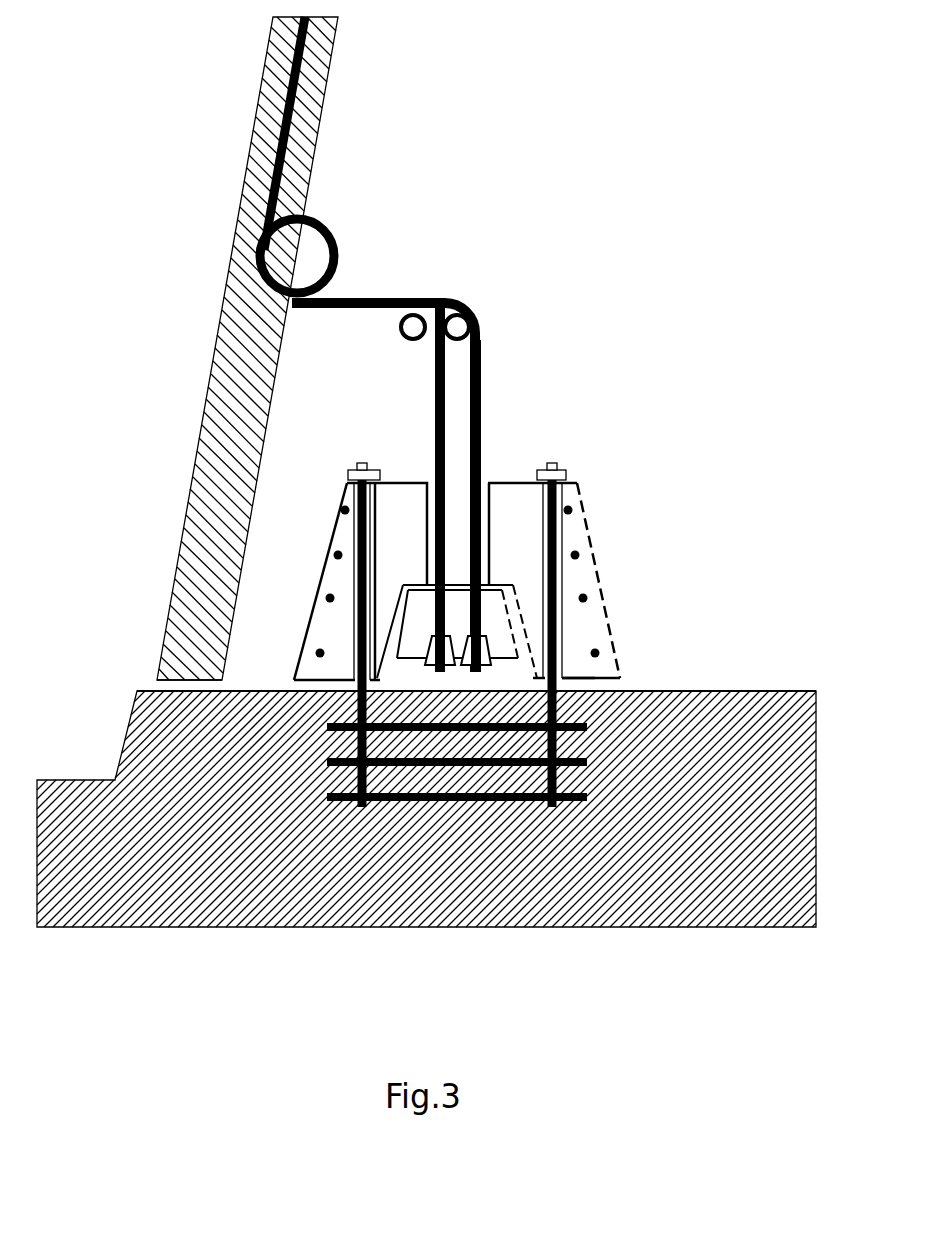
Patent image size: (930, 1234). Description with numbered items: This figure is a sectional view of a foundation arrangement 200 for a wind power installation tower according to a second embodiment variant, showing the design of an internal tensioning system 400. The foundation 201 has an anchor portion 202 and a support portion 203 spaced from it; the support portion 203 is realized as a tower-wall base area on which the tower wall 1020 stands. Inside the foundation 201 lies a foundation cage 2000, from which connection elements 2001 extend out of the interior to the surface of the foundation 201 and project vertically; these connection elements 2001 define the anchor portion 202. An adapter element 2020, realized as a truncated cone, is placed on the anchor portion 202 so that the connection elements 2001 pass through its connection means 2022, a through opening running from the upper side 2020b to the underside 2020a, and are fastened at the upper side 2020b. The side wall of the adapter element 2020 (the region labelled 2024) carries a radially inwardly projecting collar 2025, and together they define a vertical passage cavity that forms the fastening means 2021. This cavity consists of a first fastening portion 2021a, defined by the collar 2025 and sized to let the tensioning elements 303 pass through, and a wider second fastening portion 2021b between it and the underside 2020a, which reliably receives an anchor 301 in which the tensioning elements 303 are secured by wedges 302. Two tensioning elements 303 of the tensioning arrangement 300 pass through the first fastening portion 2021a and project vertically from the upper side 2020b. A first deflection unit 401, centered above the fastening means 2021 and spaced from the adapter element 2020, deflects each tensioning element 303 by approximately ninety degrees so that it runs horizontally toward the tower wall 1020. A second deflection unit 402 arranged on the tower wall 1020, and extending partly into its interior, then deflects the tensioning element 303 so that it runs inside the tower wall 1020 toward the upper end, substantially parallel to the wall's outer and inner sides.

The tower wall 1020 is at (254, 377).
The second deflection unit 402 is at (275, 250).
The first deflection unit 401 is at (452, 298).
The horizontal bar 400 is at (386, 190).
The fastening means 2021 is at (457, 395).
The tensioning elements 303 is at (482, 406).
The support assembly 300 is at (472, 205).
The foundation arrangement 200 is at (545, 195).
The upper side of the adapter element 2020b is at (345, 483).
The underside of the adapter element 2020a is at (303, 683).
The connection elements 2001 is at (363, 693).
The adapter element 2020 is at (585, 497).
The first fastening portion 2021a is at (487, 522).
The second fastening portion 2021b is at (520, 640).
The connection means 2022 is at (531, 490).
The base plate outer 2024 is at (523, 556).
The collar 2025 is at (498, 568).
The anchor 301 is at (500, 617).
The wedges 302 is at (488, 652).
The foundation 201 is at (178, 860).
The anchor portion 202 is at (613, 686).
The support portion 203 is at (163, 686).
The reinforcing bars 2000 is at (330, 797).